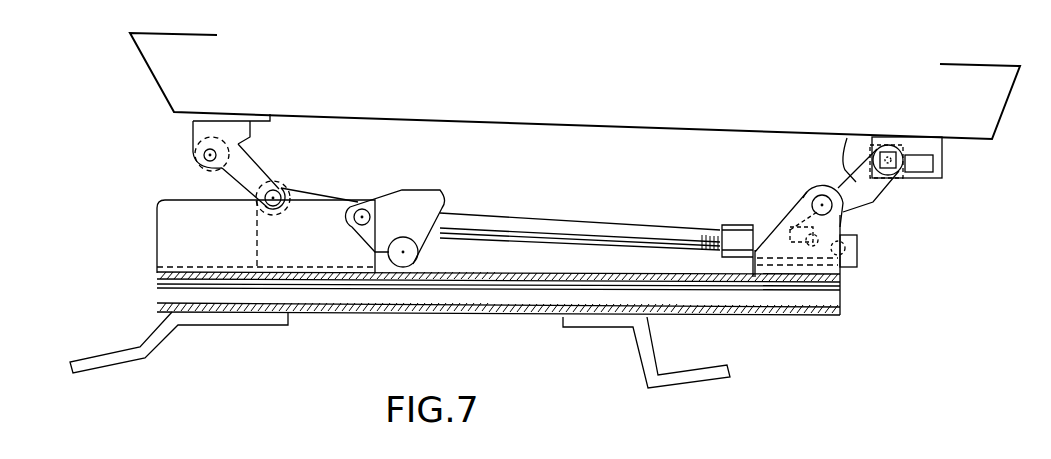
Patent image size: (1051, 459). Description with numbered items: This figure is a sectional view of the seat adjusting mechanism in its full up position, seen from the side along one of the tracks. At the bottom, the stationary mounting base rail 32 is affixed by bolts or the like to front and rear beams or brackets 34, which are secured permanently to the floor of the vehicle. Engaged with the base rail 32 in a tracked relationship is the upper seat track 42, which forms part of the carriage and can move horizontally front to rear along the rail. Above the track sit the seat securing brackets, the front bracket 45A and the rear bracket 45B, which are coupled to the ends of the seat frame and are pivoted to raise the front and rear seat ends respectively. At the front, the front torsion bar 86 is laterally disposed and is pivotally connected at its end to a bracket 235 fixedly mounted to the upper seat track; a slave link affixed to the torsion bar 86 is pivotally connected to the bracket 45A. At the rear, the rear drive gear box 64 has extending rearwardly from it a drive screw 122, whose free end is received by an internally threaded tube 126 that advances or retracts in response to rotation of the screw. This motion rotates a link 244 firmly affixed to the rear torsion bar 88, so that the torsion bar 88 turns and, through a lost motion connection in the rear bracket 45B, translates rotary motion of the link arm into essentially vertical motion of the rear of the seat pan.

The front seat securing bracket 45A is at (240, 117).
The bracket 235 is at (255, 173).
The front torsion bar 86 is at (283, 188).
The rear drive gear box 64 is at (422, 195).
The drive screw 122 is at (620, 230).
The internally threaded tube 126 is at (735, 230).
The link 244 is at (847, 140).
The rear seat securing bracket 45B is at (908, 137).
The rear torsion bar 88 is at (900, 165).
The upper seat track 42 is at (157, 275).
The mounting base rail 32 is at (160, 298).
The bracket 34 is at (160, 343).